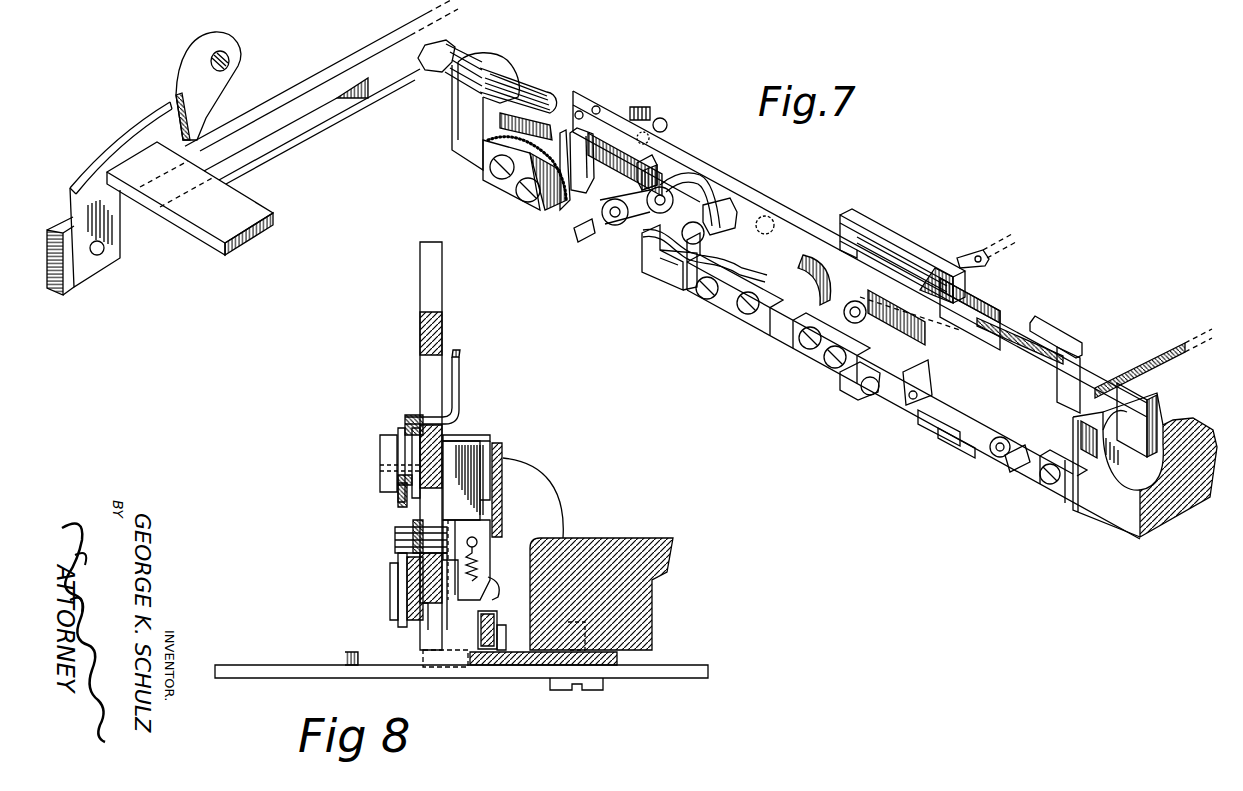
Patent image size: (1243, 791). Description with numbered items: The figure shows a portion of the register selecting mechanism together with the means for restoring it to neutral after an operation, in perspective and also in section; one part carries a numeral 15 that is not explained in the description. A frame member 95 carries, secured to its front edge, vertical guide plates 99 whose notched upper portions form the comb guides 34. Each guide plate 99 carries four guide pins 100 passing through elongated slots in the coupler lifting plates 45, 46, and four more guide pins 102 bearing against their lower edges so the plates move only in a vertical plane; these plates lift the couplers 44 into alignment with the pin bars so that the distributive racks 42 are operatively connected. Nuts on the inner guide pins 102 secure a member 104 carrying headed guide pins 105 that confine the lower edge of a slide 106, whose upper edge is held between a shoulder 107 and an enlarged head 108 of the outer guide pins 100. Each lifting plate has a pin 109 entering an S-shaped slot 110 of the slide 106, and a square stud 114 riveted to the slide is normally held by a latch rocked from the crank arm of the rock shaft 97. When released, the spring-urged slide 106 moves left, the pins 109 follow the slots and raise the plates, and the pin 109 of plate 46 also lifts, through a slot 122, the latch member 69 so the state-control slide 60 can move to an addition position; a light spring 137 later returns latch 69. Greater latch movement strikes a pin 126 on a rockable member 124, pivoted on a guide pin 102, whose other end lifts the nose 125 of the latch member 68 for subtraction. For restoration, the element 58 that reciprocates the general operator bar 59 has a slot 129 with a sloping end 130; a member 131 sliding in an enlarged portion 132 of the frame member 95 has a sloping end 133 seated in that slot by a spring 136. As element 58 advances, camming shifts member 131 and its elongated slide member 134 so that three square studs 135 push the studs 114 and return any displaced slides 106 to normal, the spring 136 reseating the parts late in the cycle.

In FIG. 7, the element 58 is at (370, 44).
In FIG. 7, the slot 129 is at (274, 148).
In FIG. 7, the sloping end 130 is at (366, 98).
In FIG. 7, the general operator bar 59 is at (185, 228).
In FIG. 7, the sloping end 133 is at (443, 47).
In FIG. 7, the enlarged portion 132 is at (503, 60).
In FIG. 7, the member 131 is at (522, 84).
In FIG. 7, the latch member 68 is at (560, 228).
In FIG. 8, the latch member 68 is at (506, 640).
In FIG. 7, the latch member 69 is at (578, 240).
In FIG. 8, the latch member 69 is at (495, 545).
In FIG. 7, the slide member 134 is at (669, 136).
In FIG. 7, the spring 136 is at (638, 103).
In FIG. 7, the square studs 135 is at (640, 158).
In FIG. 7, the lever 15 is at (682, 184).
In FIG. 7, the rockable member 124 is at (612, 225).
In FIG. 8, the rockable member 124 is at (496, 625).
In FIG. 7, the pin 126 is at (650, 235).
In FIG. 7, the guide pins 100 is at (730, 236).
In FIG. 7, the guide plates 99 is at (757, 327).
In FIG. 8, the guide plates 99 is at (418, 628).
In FIG. 7, the guide pins 102 is at (712, 302).
In FIG. 7, the enlarged head 108 is at (815, 280).
In FIG. 8, the enlarged head 108 is at (383, 442).
In FIG. 7, the pin 109 is at (850, 378).
In FIG. 8, the pin 109 is at (394, 543).
In FIG. 7, the headed guide pins 105 is at (866, 402).
In FIG. 8, the headed guide pins 105 is at (392, 585).
In FIG. 7, the square stud 114 is at (910, 398).
In FIG. 7, the slide 106 is at (945, 430).
In FIG. 8, the slide 106 is at (398, 497).
In FIG. 7, the member 104 is at (944, 440).
In FIG. 8, the member 104 is at (404, 612).
In FIG. 7, the S-shaped slot 110 is at (1012, 460).
In FIG. 7, the coupler lifting plate 46 is at (892, 243).
In FIG. 8, the coupler lifting plate 46 is at (461, 368).
In FIG. 7, the couplers 44 is at (957, 262).
In FIG. 7, the distributive racks 42 is at (992, 243).
In FIG. 7, the coupler lifting plate 45 is at (1062, 334).
In FIG. 7, the rock shaft 97 is at (1133, 356).
In FIG. 7, the frame member 95 is at (1133, 534).
In FIG. 8, the frame member 95 is at (616, 537).
In FIG. 8, the state-control slide 60 is at (330, 666).
In FIG. 8, the comb guides 34 is at (440, 308).
In FIG. 8, the shoulder 107 is at (408, 425).
In FIG. 8, the slot 122 is at (480, 588).
In FIG. 8, the light spring 137 is at (478, 567).
In FIG. 8, the nose 125 is at (492, 585).